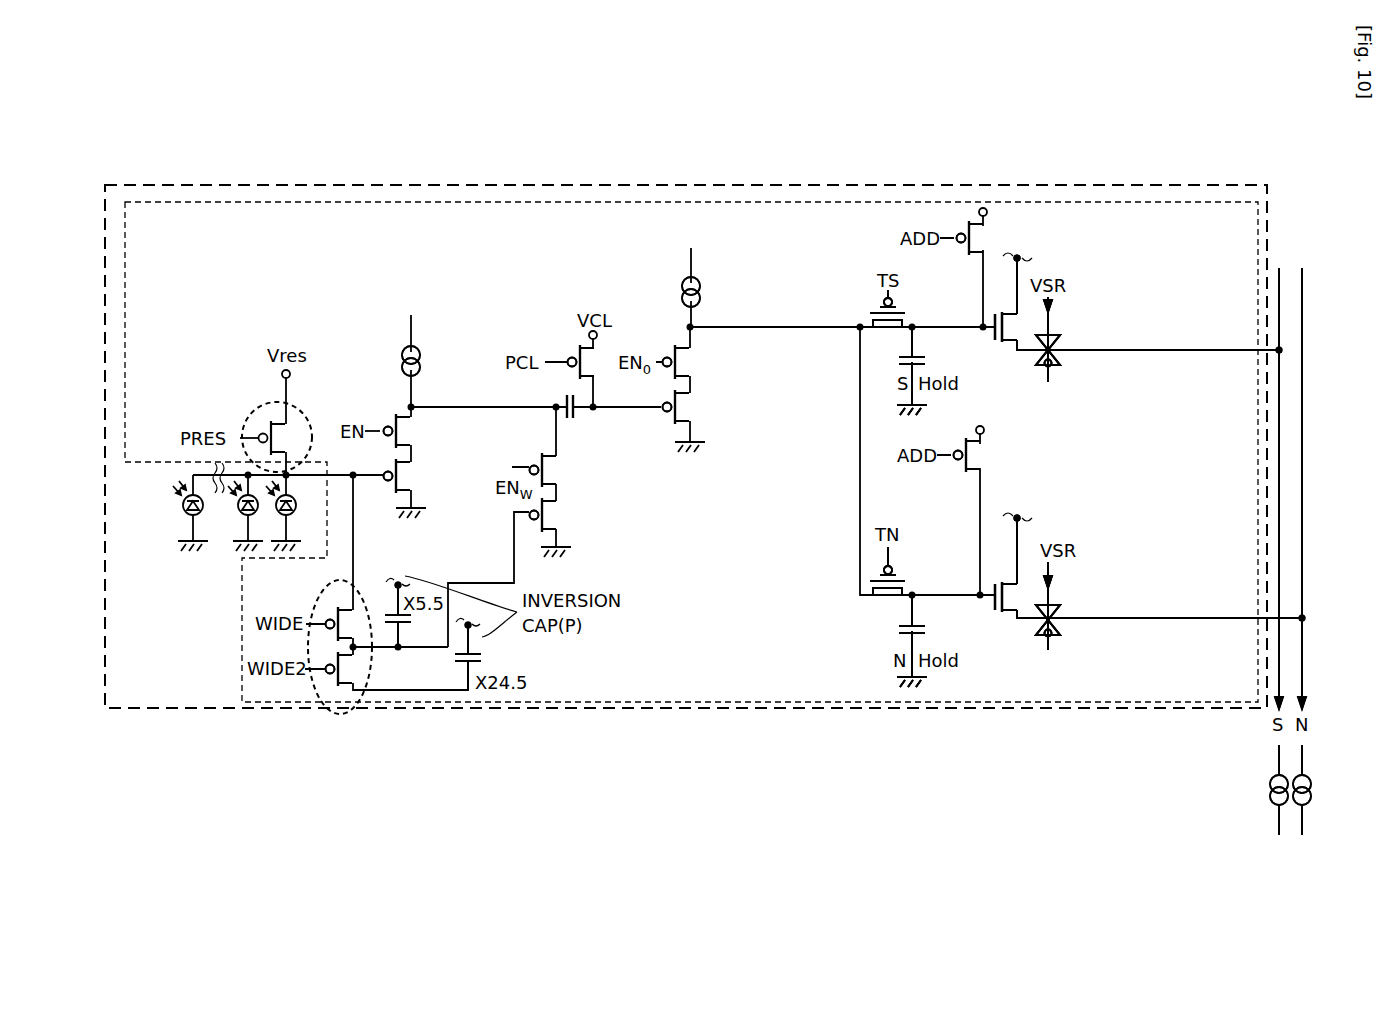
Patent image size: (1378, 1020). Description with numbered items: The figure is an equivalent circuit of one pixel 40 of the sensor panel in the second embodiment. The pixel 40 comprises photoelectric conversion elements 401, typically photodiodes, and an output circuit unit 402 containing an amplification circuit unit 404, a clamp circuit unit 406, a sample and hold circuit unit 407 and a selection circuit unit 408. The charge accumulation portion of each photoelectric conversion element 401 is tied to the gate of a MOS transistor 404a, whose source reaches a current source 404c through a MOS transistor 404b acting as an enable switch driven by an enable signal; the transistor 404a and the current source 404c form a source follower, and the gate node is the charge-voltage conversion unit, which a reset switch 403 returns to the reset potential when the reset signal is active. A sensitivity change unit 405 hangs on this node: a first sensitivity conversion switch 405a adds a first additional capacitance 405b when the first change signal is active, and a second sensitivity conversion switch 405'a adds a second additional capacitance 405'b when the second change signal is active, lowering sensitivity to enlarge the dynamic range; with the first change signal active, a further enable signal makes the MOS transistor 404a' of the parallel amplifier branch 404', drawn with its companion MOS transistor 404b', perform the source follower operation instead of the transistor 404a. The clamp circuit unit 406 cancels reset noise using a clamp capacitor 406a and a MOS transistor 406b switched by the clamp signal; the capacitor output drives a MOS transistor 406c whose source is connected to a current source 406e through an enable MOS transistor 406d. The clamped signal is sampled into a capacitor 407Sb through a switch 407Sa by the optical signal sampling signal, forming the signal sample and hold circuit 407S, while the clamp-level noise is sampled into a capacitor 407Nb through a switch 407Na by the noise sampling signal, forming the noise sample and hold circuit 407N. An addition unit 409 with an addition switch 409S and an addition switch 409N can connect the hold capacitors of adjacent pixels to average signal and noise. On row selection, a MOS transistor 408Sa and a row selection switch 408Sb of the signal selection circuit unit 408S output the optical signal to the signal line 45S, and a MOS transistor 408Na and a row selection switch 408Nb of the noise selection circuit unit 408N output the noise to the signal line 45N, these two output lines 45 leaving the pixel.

The pixel 40 is at (263, 183).
The photoelectric conversion elements 401 is at (185, 502).
The output circuit unit 402 is at (348, 199).
The reset switch 403 is at (248, 421).
The amplification circuit unit 404 is at (462, 430).
The MOS transistor 404a is at (438, 482).
The MOS transistor 404b is at (439, 441).
The current source 404c is at (423, 415).
The second amplifier circuit 404' is at (616, 490).
The MOS transistor 404a' is at (586, 524).
The enable transistor 404b' is at (587, 481).
The sensitivity change unit 405 is at (298, 647).
The first sensitivity conversion switch 405a is at (333, 612).
The first additional capacitance 405b is at (384, 620).
The second sensitivity conversion switch 405'a is at (262, 674).
The second additional capacitance 405'b is at (326, 656).
The clamp circuit unit 406 is at (747, 143).
The clamp capacitor 406a is at (563, 400).
The MOS transistor 406b is at (565, 358).
The MOS transistor 406c is at (660, 405).
The MOS transistor 406d is at (660, 362).
The current source 406e is at (690, 277).
The sample and hold circuit unit 407 is at (722, 338).
The signal sample and hold circuit 407S is at (787, 338).
The switch 407Sa is at (887, 332).
The capacitor 407Sb is at (903, 360).
The noise sample and hold circuit 407N is at (787, 603).
The switch 407Na is at (887, 600).
The capacitor 407Nb is at (903, 628).
The selection circuit unit 408 is at (1205, 398).
The signal selection circuit unit 408S is at (1133, 380).
The MOS transistor 408Sa is at (1008, 347).
The row selection switch 408Sb is at (1060, 368).
The noise selection circuit unit 408N is at (1133, 452).
The MOS transistor 408Na is at (1020, 594).
The row selection switch 408Nb is at (1062, 613).
The addition unit 409 is at (802, 208).
The addition switch 409S is at (968, 222).
The addition switch 409N is at (967, 440).
The output signal lines 45 is at (1207, 628).
The signal line 45S is at (1279, 680).
The signal line 45N is at (1302, 649).